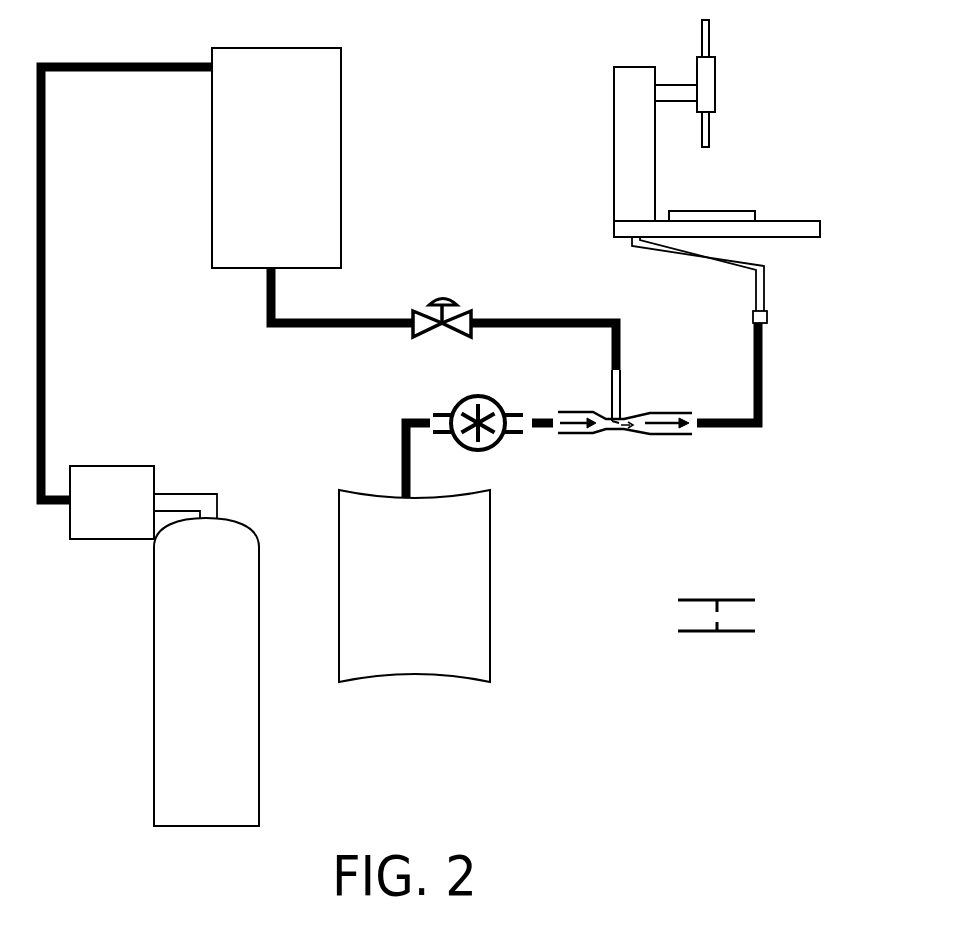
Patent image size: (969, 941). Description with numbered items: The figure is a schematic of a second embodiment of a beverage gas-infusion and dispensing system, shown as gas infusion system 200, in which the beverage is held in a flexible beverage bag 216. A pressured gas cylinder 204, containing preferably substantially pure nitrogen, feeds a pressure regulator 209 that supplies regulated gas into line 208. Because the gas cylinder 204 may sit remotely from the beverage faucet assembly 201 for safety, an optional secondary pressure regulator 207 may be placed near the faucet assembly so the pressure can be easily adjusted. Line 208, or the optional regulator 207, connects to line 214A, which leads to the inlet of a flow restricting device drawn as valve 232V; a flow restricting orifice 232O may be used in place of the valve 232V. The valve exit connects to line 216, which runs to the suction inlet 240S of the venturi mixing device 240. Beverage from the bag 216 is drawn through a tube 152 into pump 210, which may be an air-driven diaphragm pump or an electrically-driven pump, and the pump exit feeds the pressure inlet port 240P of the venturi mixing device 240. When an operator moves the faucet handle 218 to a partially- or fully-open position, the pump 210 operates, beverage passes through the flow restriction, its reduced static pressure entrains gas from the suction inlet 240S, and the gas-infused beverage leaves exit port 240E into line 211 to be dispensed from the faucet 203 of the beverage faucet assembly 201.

The gas infusion system 200 is at (444, 63).
The beverage faucet assembly 201 is at (614, 118).
The faucet 203 is at (717, 90).
The faucet handle 218 is at (710, 22).
The optional secondary pressure regulator 207 is at (211, 201).
The line 208 is at (47, 288).
The pressure regulator 209 is at (113, 462).
The pressured gas cylinder 204 is at (153, 594).
The line 214A is at (302, 316).
The valve 232V is at (447, 292).
The beverage bag 216 is at (533, 318).
The pouch tube 152 is at (400, 459).
The pump 210 is at (483, 393).
The venturi mixing device 240 is at (646, 451).
The pressure inlet port 240P is at (568, 434).
The suction inlet 240S is at (623, 380).
The exit port 240E is at (684, 435).
The line 211 is at (767, 320).
The flow restricting orifice 232O is at (717, 633).